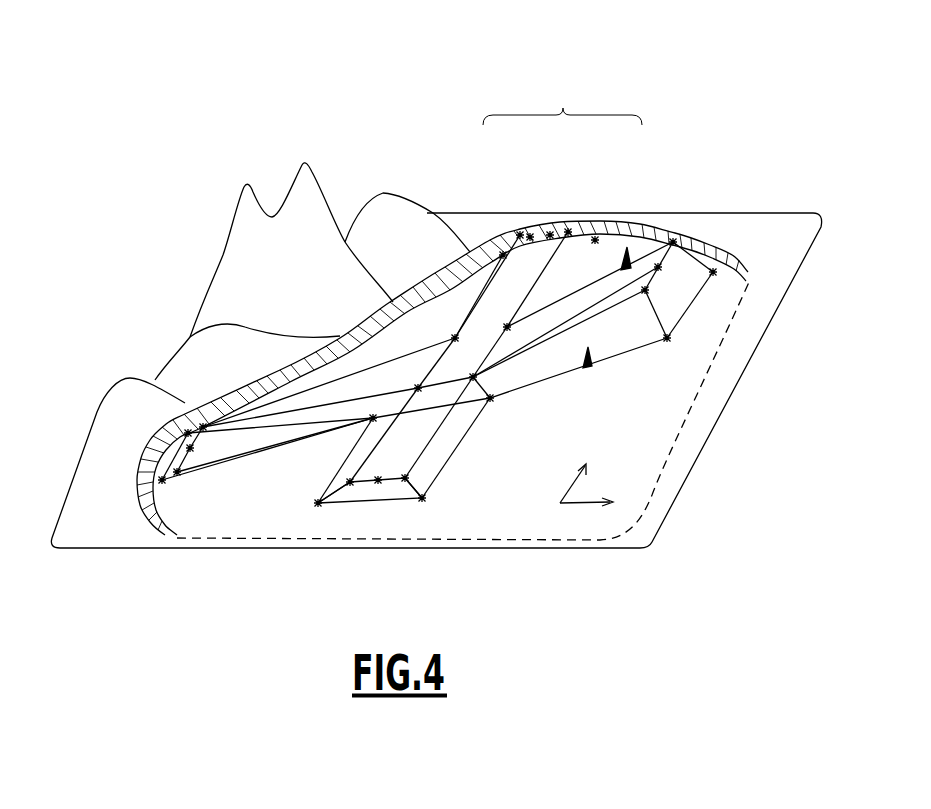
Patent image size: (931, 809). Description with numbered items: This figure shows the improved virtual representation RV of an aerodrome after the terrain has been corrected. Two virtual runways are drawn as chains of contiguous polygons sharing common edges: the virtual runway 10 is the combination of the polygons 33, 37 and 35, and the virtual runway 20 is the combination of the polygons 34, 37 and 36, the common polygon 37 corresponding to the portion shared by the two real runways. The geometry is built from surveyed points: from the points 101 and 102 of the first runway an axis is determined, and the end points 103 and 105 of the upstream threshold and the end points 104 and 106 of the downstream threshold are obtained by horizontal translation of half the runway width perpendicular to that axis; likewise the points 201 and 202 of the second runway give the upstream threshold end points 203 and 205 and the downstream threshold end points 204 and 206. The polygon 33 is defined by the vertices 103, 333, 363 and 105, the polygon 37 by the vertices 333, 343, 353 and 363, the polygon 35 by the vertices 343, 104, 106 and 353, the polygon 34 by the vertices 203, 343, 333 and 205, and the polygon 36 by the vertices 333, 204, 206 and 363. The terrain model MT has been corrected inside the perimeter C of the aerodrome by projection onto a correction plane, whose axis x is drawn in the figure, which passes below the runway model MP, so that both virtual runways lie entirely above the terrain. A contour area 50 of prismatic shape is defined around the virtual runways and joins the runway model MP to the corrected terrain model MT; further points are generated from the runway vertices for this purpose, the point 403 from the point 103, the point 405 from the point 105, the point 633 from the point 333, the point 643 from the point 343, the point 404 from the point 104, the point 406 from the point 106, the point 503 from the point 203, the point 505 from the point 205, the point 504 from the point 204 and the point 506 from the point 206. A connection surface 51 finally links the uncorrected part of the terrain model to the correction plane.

The virtual runway 10 is at (606, 228).
The virtual runway 20 is at (517, 230).
The polygon 33 is at (307, 416).
The polygon 34 is at (430, 431).
The polygon 35 is at (630, 291).
The polygon 36 is at (527, 289).
The common polygon 37 is at (478, 359).
The contour area 50 is at (589, 372).
The connection surface 51 is at (138, 480).
The point of the runway 101 is at (214, 457).
The point of the runway 102 is at (667, 240).
The end point of the upstream threshold 103 is at (165, 483).
The end point of the downstream threshold 104 is at (682, 322).
The end point of the upstream threshold 105 is at (207, 406).
The end point of the downstream threshold 106 is at (680, 246).
The point of the runway 201 is at (378, 487).
The point of the runway 202 is at (550, 232).
The end point of the upstream threshold 203 is at (420, 503).
The end point of the downstream threshold 204 is at (570, 230).
The end point of the upstream threshold 205 is at (340, 492).
The end point of the downstream threshold 206 is at (530, 234).
The vertex 333 is at (413, 376).
The vertex 343 is at (477, 414).
The vertex 353 is at (481, 291).
The vertex 363 is at (452, 336).
The point 403 is at (161, 488).
The point 404 is at (668, 350).
The point 405 is at (180, 418).
The point 406 is at (733, 262).
The point 503 is at (424, 499).
The point 504 is at (596, 238).
The point 505 is at (316, 502).
The point 506 is at (500, 250).
The point 633 is at (359, 438).
The point 643 is at (492, 399).
The terrain model MT is at (338, 186).
The runway model MP is at (562, 101).
The virtual representation RV is at (751, 143).
The perimeter of the aerodrome C is at (714, 378).
The correction plane axis x is at (594, 476).